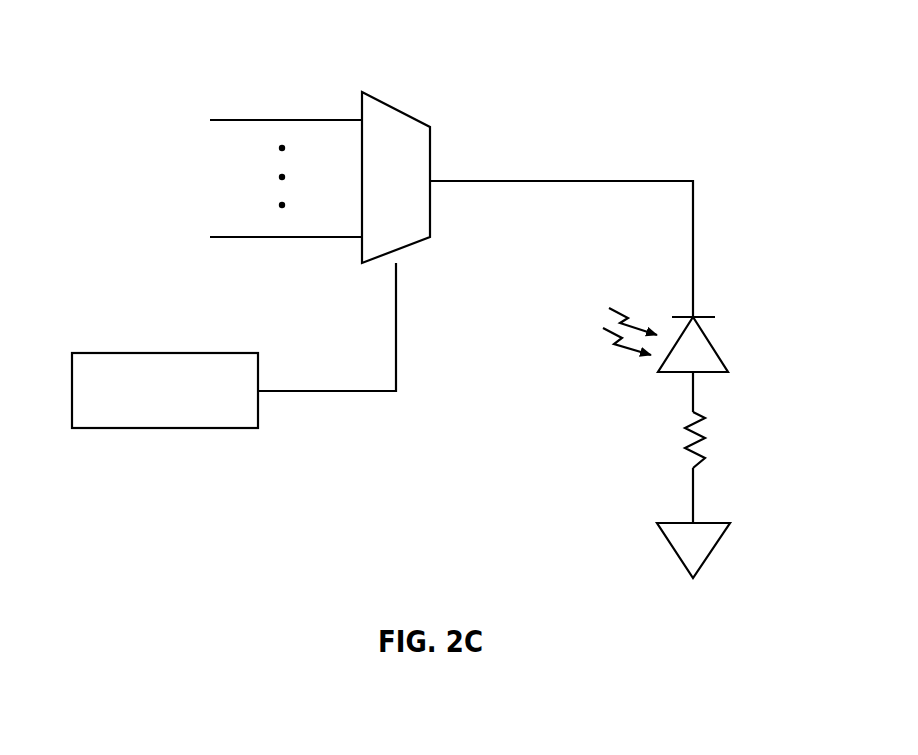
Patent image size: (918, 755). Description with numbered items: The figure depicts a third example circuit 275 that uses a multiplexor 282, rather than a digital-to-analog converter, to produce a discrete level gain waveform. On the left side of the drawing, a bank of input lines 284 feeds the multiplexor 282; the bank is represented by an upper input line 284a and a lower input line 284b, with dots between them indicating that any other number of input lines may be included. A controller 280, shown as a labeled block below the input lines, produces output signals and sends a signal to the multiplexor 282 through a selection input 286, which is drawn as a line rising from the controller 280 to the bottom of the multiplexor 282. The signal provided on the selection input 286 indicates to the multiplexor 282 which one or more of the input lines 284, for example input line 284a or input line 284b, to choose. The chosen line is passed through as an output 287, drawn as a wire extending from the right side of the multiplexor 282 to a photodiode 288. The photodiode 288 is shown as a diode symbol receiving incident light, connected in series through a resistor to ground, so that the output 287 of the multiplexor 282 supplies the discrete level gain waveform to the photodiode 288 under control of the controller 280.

The third example circuit 275 is at (128, 46).
The controller 280 is at (145, 352).
The multiplexor 282 is at (415, 115).
The input lines 284 is at (197, 120).
The input line 284a is at (289, 115).
The input line 284b is at (289, 245).
The selection input 286 is at (353, 392).
The output 287 is at (553, 181).
The photodiode 288 is at (715, 301).